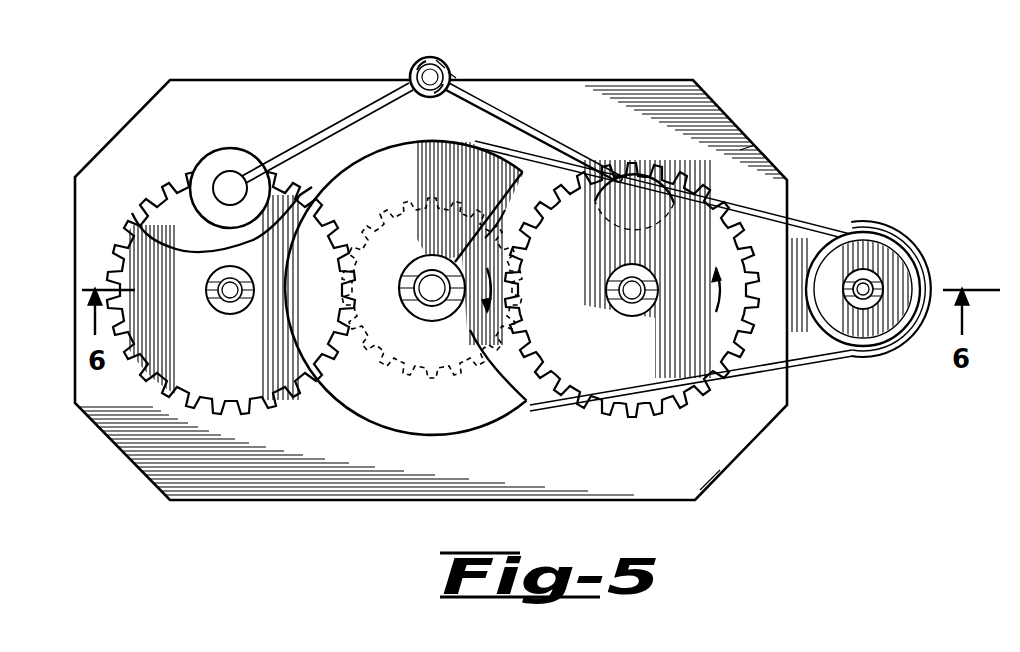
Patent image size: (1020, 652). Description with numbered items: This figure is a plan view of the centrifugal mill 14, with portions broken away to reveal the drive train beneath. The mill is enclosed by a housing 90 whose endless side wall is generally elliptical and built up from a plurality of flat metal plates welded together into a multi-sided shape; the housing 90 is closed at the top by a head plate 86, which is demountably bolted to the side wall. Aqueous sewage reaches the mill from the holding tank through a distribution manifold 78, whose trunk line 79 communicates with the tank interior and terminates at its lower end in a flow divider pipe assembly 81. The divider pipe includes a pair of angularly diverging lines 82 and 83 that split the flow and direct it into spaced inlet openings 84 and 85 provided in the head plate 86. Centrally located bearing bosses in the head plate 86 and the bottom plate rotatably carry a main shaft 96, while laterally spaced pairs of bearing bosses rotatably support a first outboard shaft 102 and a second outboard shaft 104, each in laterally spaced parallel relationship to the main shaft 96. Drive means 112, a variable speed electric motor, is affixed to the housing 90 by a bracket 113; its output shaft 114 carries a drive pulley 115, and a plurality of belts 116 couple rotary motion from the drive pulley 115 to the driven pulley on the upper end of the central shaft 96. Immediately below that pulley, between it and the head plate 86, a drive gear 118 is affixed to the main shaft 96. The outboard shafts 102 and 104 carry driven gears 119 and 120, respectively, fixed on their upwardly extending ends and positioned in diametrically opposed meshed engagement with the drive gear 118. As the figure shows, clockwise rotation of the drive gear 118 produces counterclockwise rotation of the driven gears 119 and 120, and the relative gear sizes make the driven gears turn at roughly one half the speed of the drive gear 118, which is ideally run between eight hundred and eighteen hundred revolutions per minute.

The centrifugal mill 14 is at (742, 122).
The distribution manifold 78 is at (448, 60).
The trunk line 79 is at (434, 57).
The flow divider pipe assembly 81 is at (459, 78).
The angularly diverging line 82 is at (336, 124).
The angularly diverging line 83 is at (516, 122).
The inlet opening 84 is at (240, 156).
The inlet opening 85 is at (662, 150).
The head plate 86 is at (755, 150).
The housing 90 is at (760, 450).
The main shaft 96 is at (418, 300).
The first outboard shaft 102 is at (219, 300).
The second outboard shaft 104 is at (630, 304).
The drive means 112 is at (900, 242).
The bracket 113 is at (802, 338).
The output shaft 114 is at (875, 283).
The drive pulley 115 is at (848, 250).
The belts 116 is at (796, 230).
The drive gear 118 is at (492, 238).
The driven gear 119 is at (262, 400).
The driven gear 120 is at (662, 404).